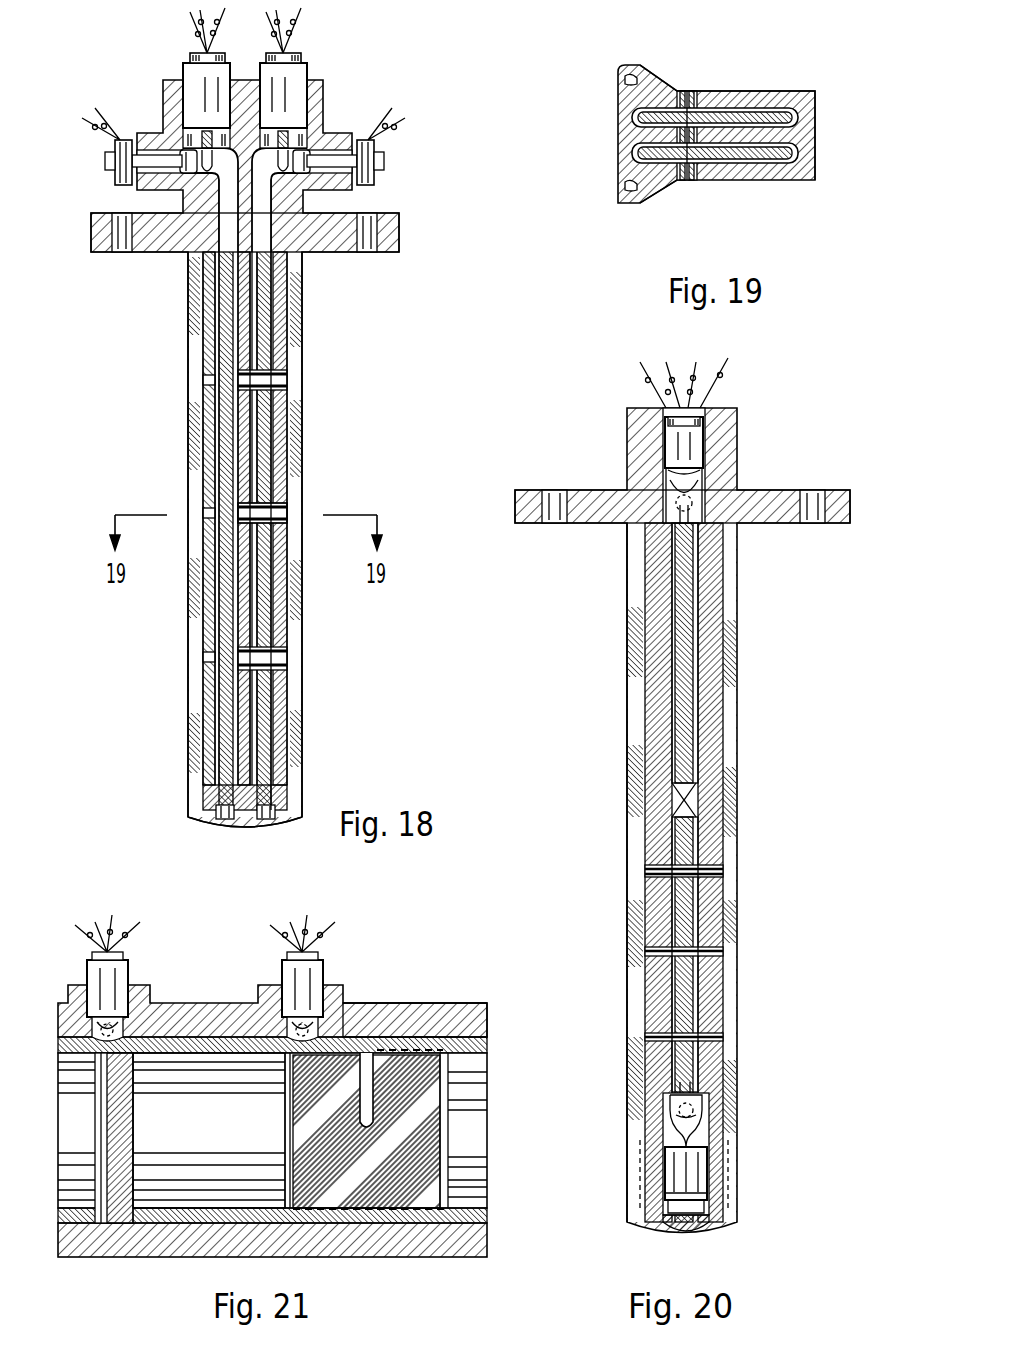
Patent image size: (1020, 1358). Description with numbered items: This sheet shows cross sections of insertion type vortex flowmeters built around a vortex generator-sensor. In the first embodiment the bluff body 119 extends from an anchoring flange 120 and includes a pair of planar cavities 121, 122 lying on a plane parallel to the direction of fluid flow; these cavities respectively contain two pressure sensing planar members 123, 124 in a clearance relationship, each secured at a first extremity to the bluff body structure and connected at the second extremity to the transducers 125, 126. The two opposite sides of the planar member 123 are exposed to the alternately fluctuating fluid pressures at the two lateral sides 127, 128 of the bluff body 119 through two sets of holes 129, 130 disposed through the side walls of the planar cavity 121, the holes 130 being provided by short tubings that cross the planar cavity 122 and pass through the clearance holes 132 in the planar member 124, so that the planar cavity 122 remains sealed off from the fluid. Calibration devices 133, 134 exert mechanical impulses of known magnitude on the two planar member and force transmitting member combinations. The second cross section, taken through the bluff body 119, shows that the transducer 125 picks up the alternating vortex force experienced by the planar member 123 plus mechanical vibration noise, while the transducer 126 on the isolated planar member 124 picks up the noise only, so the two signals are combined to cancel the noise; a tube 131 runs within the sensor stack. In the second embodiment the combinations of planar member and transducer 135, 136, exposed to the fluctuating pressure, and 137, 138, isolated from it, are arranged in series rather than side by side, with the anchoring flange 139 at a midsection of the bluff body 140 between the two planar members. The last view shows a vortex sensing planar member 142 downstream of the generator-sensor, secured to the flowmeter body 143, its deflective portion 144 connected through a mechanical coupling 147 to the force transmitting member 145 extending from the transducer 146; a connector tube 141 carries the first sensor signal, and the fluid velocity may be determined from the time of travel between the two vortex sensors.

In FIG. 18, the bluff body 119 is at (215, 830).
In FIG. 19, the bluff body 119 is at (618, 140).
In FIG. 18, the anchoring flange 120 is at (330, 262).
In FIG. 18, the first planar cavity 121 is at (200, 290).
In FIG. 18, the second planar cavity 122 is at (292, 300).
In FIG. 18, the pressure sensing planar member 123 is at (220, 447).
In FIG. 19, the pressure sensing planar member 123 is at (762, 155).
In FIG. 18, the pressure sensing planar member 124 is at (262, 445).
In FIG. 19, the pressure sensing planar member 124 is at (770, 110).
In FIG. 18, the transducer 125 is at (210, 85).
In FIG. 18, the transducer 126 is at (285, 85).
In FIG. 18, the lateral side of bluff body 127 is at (200, 700).
In FIG. 19, the lateral side of bluff body 127 is at (652, 200).
In FIG. 18, the lateral side of bluff body 128 is at (300, 690).
In FIG. 19, the lateral side of bluff body 128 is at (650, 68).
In FIG. 18, the holes 129 is at (205, 515).
In FIG. 19, the holes 129 is at (687, 180).
In FIG. 18, the holes 130 is at (285, 518).
In FIG. 19, the holes 130 is at (688, 91).
In FIG. 18, the second inner heat exchange tube 131 is at (300, 555).
In FIG. 19, the second inner heat exchange tube 131 is at (725, 91).
In FIG. 18, the clearance holes 132 is at (285, 490).
In FIG. 18, the calibration device 133 is at (120, 140).
In FIG. 18, the calibration device 134 is at (368, 140).
In FIG. 20, the planar member 135 is at (690, 988).
In FIG. 20, the transducer 136 is at (690, 1165).
In FIG. 20, the planar member 137 is at (680, 687).
In FIG. 20, the transducer 138 is at (684, 447).
In FIG. 20, the anchoring flange 139 is at (598, 490).
In FIG. 20, the bluff body 140 is at (627, 843).
In FIG. 21, the first connector tube 141 is at (133, 1105).
In FIG. 21, the vortex sensing planar member 142 is at (430, 1163).
In FIG. 21, the flowmeter body 143 is at (435, 1018).
In FIG. 21, the deflective portion 144 is at (382, 1003).
In FIG. 21, the force transmitting member 145 is at (243, 1032).
In FIG. 21, the transducer 146 is at (305, 990).
In FIG. 21, the mechanical coupling 147 is at (240, 1078).